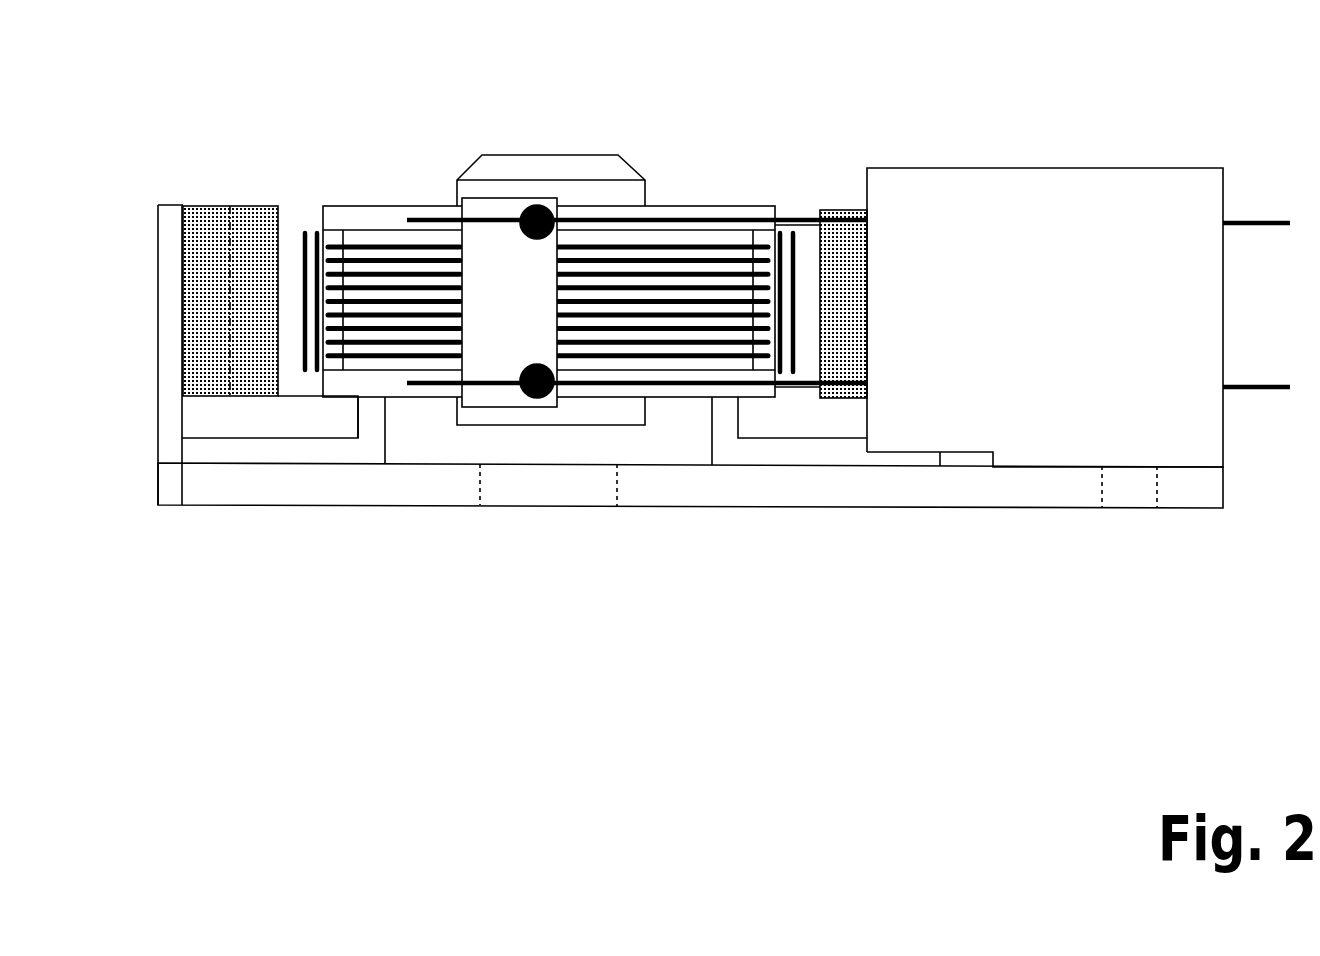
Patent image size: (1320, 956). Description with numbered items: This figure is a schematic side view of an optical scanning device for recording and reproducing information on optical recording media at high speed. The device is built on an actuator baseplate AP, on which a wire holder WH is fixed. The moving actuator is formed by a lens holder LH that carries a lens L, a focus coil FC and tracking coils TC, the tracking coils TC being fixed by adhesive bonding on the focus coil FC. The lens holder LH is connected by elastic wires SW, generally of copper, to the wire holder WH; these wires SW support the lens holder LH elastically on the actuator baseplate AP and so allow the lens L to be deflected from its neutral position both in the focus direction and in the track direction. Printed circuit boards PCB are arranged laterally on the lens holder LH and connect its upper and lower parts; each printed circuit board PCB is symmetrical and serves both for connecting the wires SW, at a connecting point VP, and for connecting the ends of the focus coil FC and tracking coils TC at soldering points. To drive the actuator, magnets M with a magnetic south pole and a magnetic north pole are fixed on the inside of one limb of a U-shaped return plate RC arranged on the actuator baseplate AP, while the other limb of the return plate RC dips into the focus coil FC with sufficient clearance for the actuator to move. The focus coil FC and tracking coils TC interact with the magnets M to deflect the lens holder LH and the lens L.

The actuator baseplate AP is at (1072, 488).
The U-shaped return plate RC is at (332, 452).
The magnets M is at (198, 385).
The tracking coils TC is at (305, 220).
The lens holder LH is at (390, 385).
The focus coil FC is at (397, 253).
The lens L is at (605, 160).
The printed circuit board PCB is at (514, 397).
The wires SW is at (805, 215).
The connecting point VP is at (540, 210).
The wire holder WH is at (988, 168).